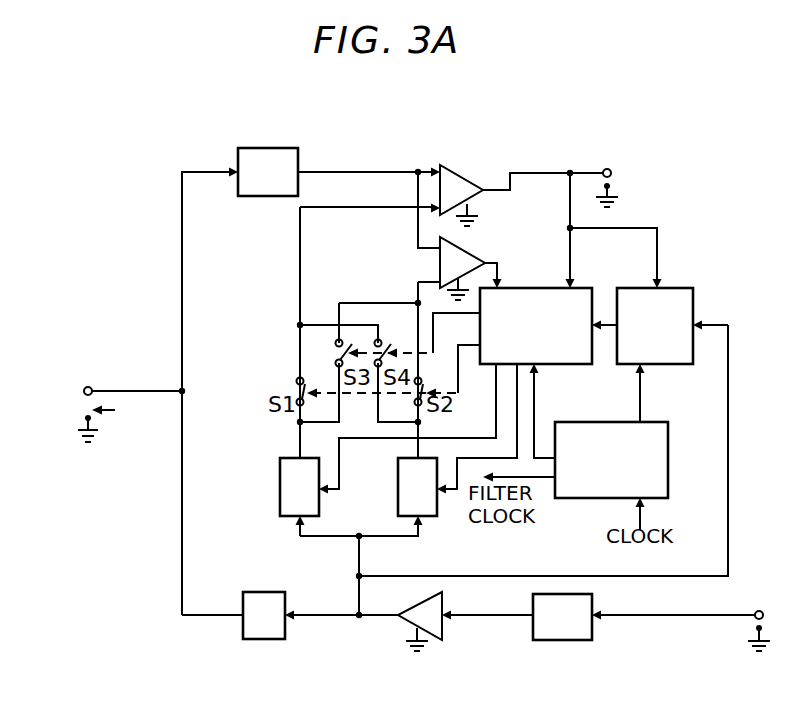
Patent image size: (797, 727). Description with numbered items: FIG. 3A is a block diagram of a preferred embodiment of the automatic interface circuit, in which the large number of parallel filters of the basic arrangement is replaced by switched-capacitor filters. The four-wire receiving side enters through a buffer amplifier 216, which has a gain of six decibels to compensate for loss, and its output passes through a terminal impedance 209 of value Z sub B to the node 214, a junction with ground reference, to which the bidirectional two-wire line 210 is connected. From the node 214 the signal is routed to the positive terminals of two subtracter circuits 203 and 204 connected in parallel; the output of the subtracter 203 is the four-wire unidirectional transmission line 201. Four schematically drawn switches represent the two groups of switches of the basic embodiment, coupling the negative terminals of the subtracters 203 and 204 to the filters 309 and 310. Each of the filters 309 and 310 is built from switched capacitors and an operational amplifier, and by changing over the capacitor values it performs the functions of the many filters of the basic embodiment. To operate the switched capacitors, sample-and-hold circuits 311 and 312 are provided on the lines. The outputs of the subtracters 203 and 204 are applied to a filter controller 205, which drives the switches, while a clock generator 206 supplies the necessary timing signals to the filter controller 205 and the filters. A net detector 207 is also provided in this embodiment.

The four-wire unidirectional transmission line 201 is at (626, 184).
The subtracter circuit 203 is at (443, 168).
The subtracter circuit 204 is at (441, 240).
The filter controller 205 is at (568, 365).
The clock generator 206 is at (652, 422).
The net detector 207 is at (698, 298).
The terminal impedance 209 is at (260, 640).
The bidirectional two-wire line 210 is at (90, 403).
The node 214 is at (184, 390).
The buffer amplifier 216 is at (422, 600).
The filter 309 is at (280, 490).
The filter 310 is at (437, 516).
The sample-and-hold circuit 311 is at (560, 641).
The sample-and-hold circuit 312 is at (268, 148).